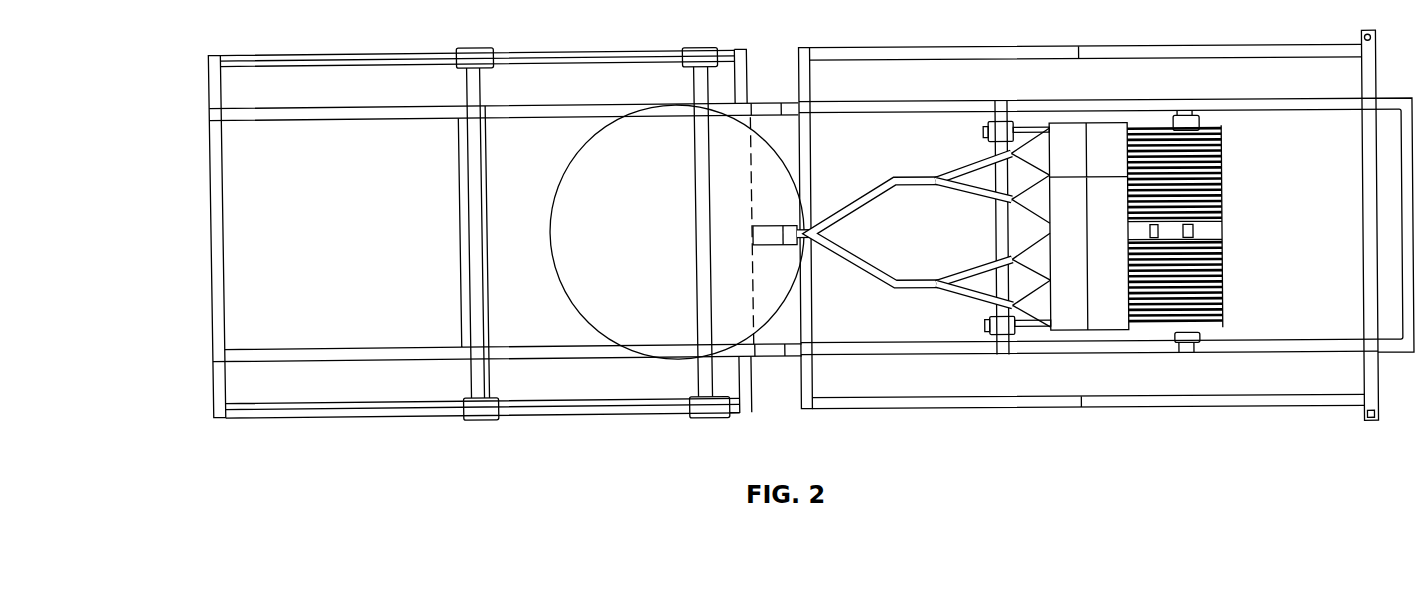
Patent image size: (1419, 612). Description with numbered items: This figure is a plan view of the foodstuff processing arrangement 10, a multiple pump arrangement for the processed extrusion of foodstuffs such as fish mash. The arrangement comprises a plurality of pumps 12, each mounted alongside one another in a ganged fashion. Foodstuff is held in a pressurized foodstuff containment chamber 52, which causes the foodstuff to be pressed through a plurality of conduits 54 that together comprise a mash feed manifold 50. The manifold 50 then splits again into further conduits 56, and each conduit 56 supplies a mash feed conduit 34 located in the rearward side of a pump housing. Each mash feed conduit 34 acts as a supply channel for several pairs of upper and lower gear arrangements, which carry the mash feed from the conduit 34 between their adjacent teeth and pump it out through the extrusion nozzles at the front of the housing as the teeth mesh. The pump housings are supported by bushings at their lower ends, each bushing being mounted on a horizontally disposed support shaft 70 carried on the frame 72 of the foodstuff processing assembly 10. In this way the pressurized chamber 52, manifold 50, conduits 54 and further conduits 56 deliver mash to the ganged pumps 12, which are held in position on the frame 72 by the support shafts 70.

The foodstuff processing arrangement 10 is at (1041, 91).
The pumps 12 is at (1162, 336).
The mash feed conduit 34 is at (1027, 162).
The mash feed manifold 50 is at (910, 186).
The pressurized foodstuff containment chamber 52 is at (541, 339).
The conduits 54 is at (863, 205).
The further conduits 56 is at (977, 160).
The support shaft 70 is at (1016, 118).
The frame 72 is at (568, 50).